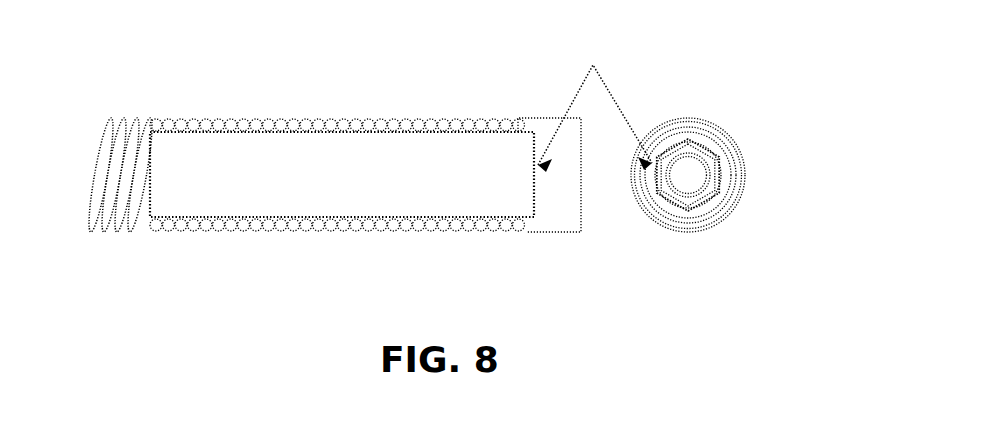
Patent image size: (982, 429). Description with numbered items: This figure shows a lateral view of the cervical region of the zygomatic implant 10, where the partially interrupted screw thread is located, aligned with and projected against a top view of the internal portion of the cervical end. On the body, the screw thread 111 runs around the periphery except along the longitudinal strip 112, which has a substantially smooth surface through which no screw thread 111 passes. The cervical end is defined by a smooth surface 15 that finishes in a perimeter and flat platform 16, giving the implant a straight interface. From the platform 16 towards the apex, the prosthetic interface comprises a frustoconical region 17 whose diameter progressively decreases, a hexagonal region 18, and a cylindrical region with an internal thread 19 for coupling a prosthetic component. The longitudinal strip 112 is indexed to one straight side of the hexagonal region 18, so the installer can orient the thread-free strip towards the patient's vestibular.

The zygomatic implant 10 is at (130, 98).
The screw thread 111 is at (448, 117).
The longitudinal strip 112 is at (283, 165).
The smooth surface 15 is at (543, 125).
The platform 16 is at (718, 137).
The frustoconical region 17 is at (713, 207).
The hexagonal region 18 is at (718, 168).
The internal thread 19 is at (688, 175).